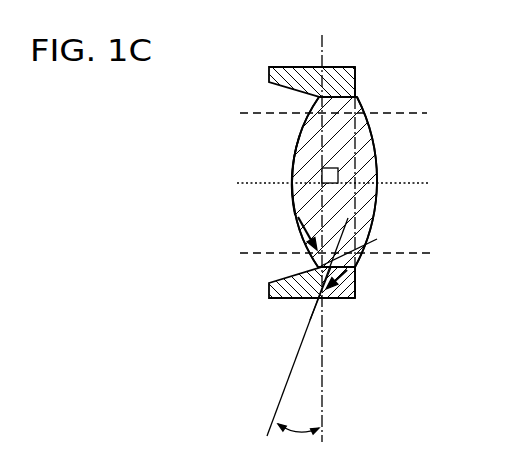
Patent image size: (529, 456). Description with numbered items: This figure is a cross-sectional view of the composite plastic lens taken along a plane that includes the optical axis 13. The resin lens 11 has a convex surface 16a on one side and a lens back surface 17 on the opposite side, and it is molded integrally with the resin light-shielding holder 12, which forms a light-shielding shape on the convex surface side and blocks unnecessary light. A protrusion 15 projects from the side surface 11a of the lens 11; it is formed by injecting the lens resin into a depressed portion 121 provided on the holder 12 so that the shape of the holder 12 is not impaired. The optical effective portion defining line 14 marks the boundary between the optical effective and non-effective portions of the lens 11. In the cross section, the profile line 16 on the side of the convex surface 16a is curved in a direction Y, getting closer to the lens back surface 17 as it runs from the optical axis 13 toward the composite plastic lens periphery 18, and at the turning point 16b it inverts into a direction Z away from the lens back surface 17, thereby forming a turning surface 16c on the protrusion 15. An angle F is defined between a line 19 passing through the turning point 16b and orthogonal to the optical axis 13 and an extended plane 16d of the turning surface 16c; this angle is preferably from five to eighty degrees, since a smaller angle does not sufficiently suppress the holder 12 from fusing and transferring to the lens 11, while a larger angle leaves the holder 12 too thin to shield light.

The resin lens 11 is at (297, 141).
The side surface 11a is at (355, 87).
The resin light-shielding holder 12 is at (341, 72).
The optical axis 13 is at (252, 185).
The optical effective portion defining line 14 is at (427, 113).
The protrusion 15 is at (357, 269).
The profile line 16 is at (291, 199).
The convex surface 16a is at (291, 172).
The turning point 16b is at (377, 239).
The turning surface 16c is at (313, 298).
The extended plane of the turning surface 16d is at (286, 383).
The lens back surface 17 is at (378, 145).
The composite plastic lens periphery 18 is at (348, 299).
The line orthogonal to the optical axis 19 is at (322, 377).
The depressed portion 121 is at (356, 287).
The direction Y is at (298, 220).
The direction Z is at (333, 299).
The angle F is at (298, 418).